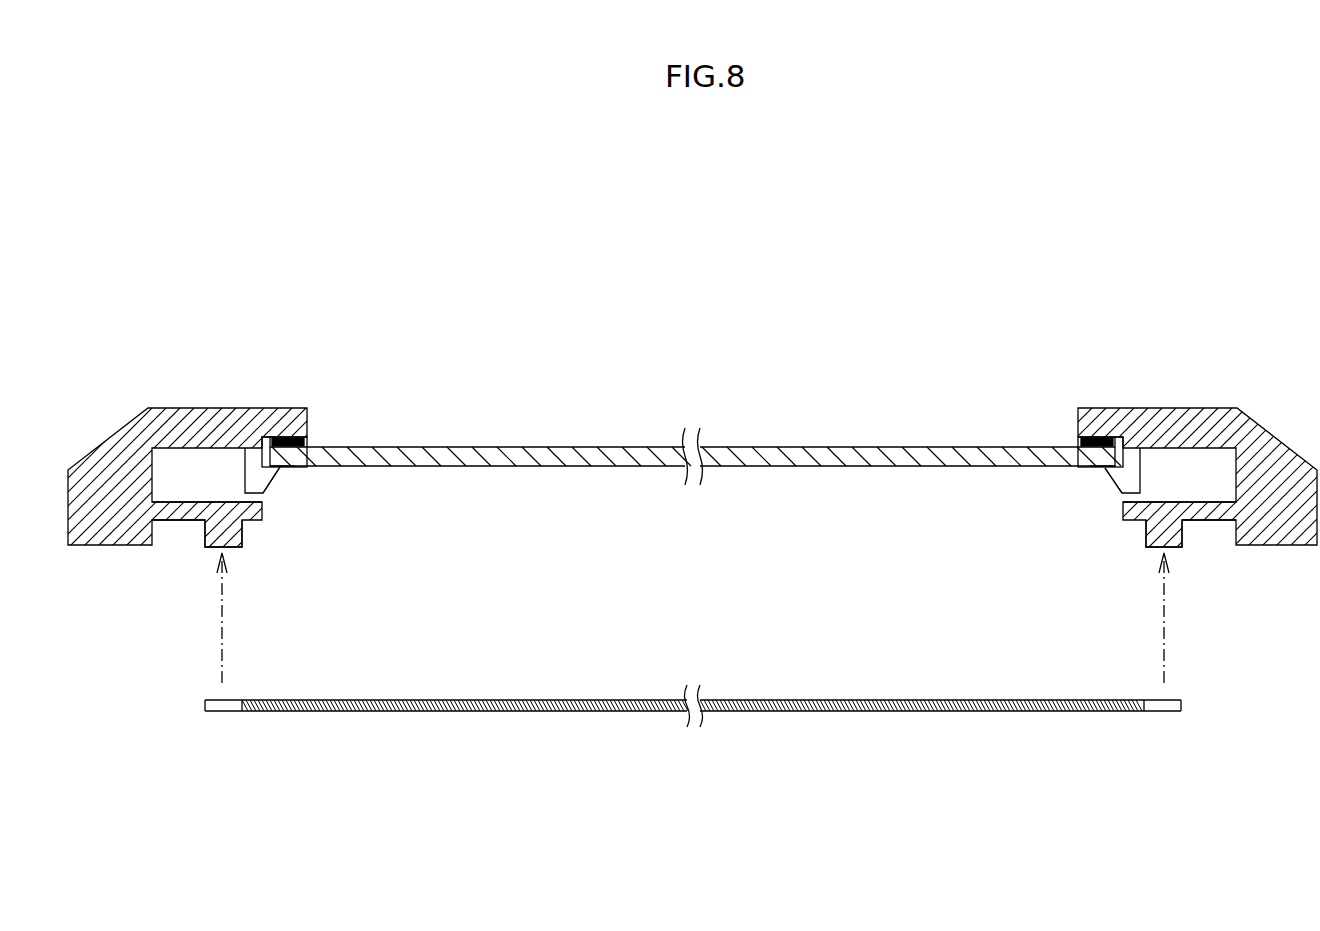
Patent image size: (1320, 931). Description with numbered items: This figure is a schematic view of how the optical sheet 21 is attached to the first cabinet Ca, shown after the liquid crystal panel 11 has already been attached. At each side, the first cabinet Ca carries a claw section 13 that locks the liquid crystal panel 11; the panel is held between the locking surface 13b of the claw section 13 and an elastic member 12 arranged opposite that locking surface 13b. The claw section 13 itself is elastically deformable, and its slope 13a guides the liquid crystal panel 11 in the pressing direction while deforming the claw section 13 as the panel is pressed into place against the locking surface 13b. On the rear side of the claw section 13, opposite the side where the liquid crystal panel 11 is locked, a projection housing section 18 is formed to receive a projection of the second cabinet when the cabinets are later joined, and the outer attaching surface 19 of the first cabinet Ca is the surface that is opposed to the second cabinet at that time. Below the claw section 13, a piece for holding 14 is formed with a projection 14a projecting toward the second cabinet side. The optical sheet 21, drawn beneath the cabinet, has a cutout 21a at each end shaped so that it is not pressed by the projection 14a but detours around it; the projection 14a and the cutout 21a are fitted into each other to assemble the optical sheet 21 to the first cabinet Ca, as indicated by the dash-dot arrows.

The liquid crystal panel 11 is at (856, 445).
The elastic member 12 is at (305, 440).
The claw section 13 is at (252, 464).
The slope 13a is at (277, 468).
The locking surface 13b is at (287, 458).
The piece for holding 14 is at (182, 508).
The projection 14a is at (235, 528).
The projection housing section 18 is at (206, 462).
The attaching surface 19 is at (660, 476).
The optical sheet 21 is at (853, 698).
The cutout 21a is at (240, 707).
The first cabinet Ca is at (1220, 408).